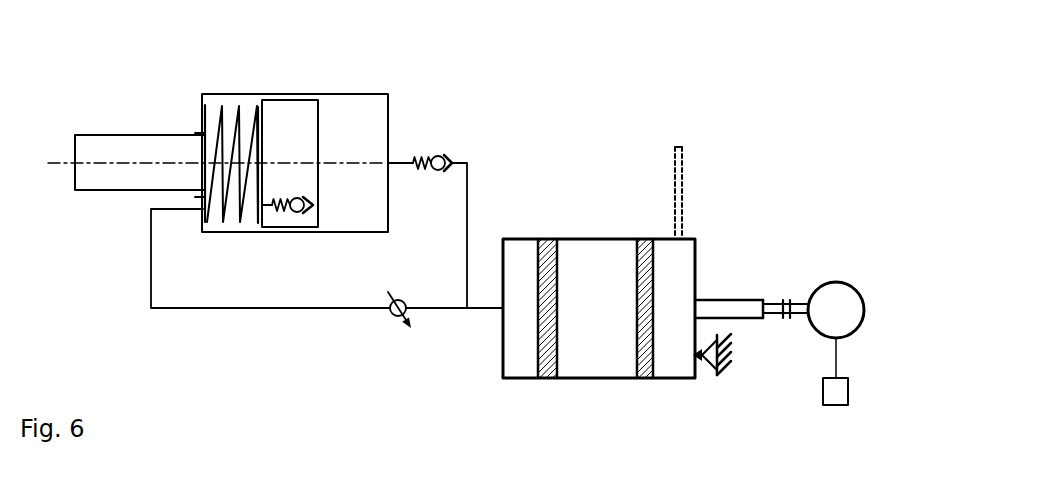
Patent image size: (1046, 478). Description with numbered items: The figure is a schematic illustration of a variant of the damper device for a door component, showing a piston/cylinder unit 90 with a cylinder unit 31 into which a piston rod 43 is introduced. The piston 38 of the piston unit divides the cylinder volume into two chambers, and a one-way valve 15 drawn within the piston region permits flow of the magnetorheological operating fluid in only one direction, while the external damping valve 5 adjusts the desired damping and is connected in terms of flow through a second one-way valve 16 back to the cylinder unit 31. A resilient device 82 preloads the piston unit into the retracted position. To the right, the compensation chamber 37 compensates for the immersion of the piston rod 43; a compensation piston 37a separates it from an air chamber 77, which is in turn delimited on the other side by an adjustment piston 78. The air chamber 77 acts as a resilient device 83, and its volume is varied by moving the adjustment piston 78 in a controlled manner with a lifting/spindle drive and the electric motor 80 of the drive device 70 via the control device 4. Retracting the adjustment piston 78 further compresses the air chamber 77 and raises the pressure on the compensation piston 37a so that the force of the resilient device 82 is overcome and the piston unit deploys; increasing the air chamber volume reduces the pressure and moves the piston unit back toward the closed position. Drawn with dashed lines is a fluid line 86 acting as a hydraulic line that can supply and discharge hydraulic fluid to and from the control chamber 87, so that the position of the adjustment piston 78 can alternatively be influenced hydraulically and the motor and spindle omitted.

The control device 4 is at (838, 393).
The damping valve 5 is at (390, 330).
The one-way valve 15 is at (286, 225).
The second one-way valve 16 is at (438, 155).
The cylinder unit 31 is at (360, 92).
The compensation chamber 37 is at (517, 263).
The compensation piston 37a is at (548, 362).
The piston 38 is at (290, 107).
The piston rod 43 is at (105, 147).
The drive device 70 is at (768, 118).
The air chamber 77 is at (595, 263).
The adjustment piston 78 is at (642, 362).
The electric motor 80 is at (835, 298).
The resilient device 82 is at (222, 108).
The resilient device 83 is at (589, 228).
The fluid line 86 is at (675, 158).
The control chamber 87 is at (677, 278).
The piston/cylinder unit 90 is at (320, 68).